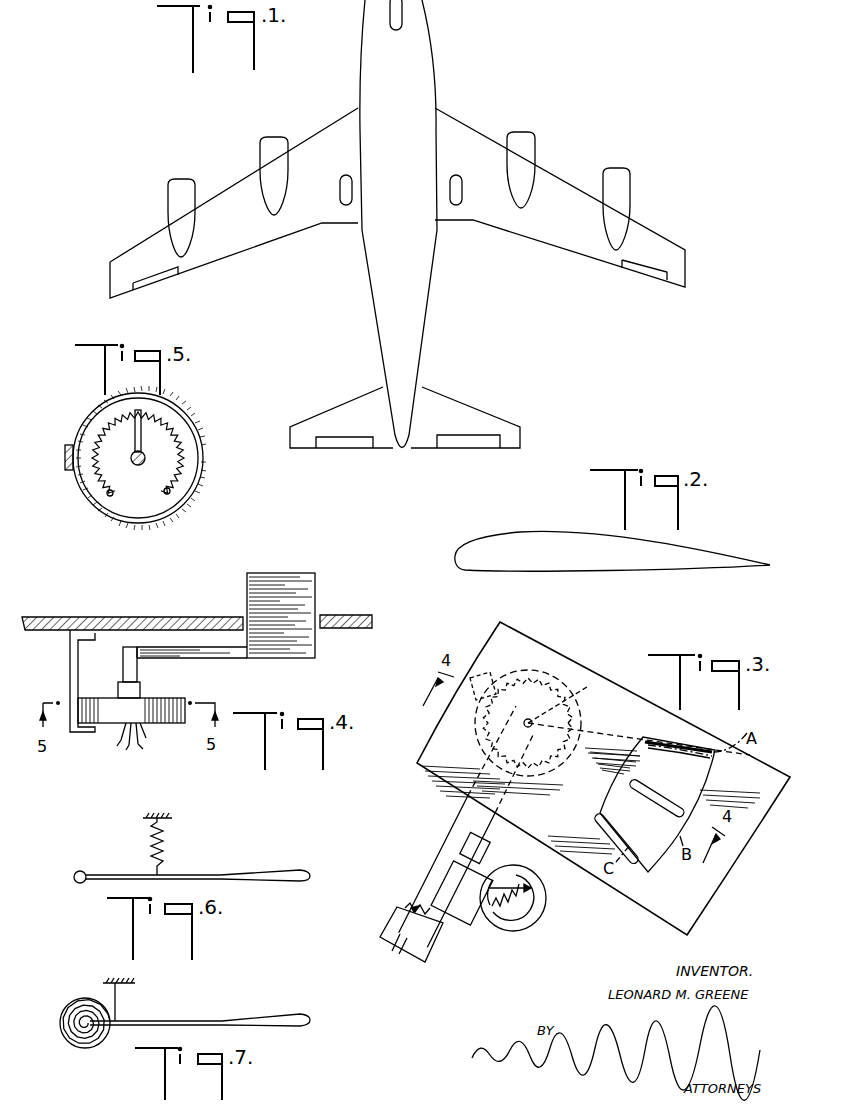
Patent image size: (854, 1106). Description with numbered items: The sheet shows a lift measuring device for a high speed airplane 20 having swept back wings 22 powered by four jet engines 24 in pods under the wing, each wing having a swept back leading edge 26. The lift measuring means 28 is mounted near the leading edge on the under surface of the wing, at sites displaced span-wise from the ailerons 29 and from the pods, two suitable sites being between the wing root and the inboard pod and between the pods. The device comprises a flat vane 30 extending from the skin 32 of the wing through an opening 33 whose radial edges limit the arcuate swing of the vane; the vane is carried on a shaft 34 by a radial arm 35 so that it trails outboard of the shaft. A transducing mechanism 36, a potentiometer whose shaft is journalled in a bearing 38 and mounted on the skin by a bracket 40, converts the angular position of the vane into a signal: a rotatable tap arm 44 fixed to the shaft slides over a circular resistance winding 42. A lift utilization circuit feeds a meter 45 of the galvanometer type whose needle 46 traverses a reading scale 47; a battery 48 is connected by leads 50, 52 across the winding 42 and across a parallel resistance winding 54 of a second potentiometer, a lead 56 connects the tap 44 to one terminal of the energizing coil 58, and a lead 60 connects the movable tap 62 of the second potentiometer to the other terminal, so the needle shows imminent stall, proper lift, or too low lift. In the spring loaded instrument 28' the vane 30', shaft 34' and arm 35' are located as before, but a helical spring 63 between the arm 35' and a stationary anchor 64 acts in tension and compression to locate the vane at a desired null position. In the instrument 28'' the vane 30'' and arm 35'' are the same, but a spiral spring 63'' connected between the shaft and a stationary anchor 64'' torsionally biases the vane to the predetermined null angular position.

In FIG. 1, the airplane 20 is at (368, 348).
In FIG. 1, the swept back wings 22 is at (262, 237).
In FIG. 2, the swept back wings 22 is at (541, 573).
In FIG. 1, the jet engines 24 is at (622, 194).
In FIG. 1, the swept back leading edge 26 is at (548, 171).
In FIG. 2, the swept back leading edge 26 is at (466, 546).
In FIG. 1, the lift measuring means 28 is at (529, 147).
In FIG. 2, the lift measuring means 28 is at (442, 581).
In FIG. 3, the lift measuring means 28 is at (713, 722).
In FIG. 1, the ailerons 29 is at (650, 278).
In FIG. 3, the vane 30 is at (654, 804).
In FIG. 4, the vane 30 is at (259, 611).
In FIG. 4, the skin 32 is at (115, 617).
In FIG. 3, the opening 33 is at (716, 787).
In FIG. 4, the opening 33 is at (318, 628).
In FIG. 3, the shaft 34 is at (516, 711).
In FIG. 4, the shaft 34 is at (112, 664).
In FIG. 5, the shaft 34 is at (137, 472).
In FIG. 4, the arm 35 is at (192, 625).
In FIG. 4, the transducing mechanism 36 is at (109, 736).
In FIG. 4, the bearing 38 is at (140, 691).
In FIG. 4, the bracket 40 is at (70, 668).
In FIG. 5, the bracket 40 is at (67, 469).
In FIG. 3, the circular resistance winding 42 is at (575, 726).
In FIG. 5, the circular resistance winding 42 is at (180, 438).
In FIG. 3, the rotatable tap arm 44 is at (565, 696).
In FIG. 5, the rotatable tap arm 44 is at (141, 439).
In FIG. 3, the meter 45 is at (516, 931).
In FIG. 3, the needle 46 is at (533, 879).
In FIG. 3, the reading scale 47 is at (548, 911).
In FIG. 3, the battery 48 is at (393, 955).
In FIG. 3, the lead 50 is at (403, 904).
In FIG. 3, the lead 52 is at (438, 940).
In FIG. 3, the resistance winding 54 is at (397, 920).
In FIG. 3, the lead 56 is at (466, 832).
In FIG. 3, the energizing coil 58 is at (513, 879).
In FIG. 3, the lead 60 is at (480, 885).
In FIG. 3, the movable tap 62 is at (442, 922).
In FIG. 6, the helical spring 63 is at (183, 846).
In FIG. 6, the stationary anchor 64 is at (179, 801).
In FIG. 6, the instrument 28' is at (70, 900).
In FIG. 6, the vane 30' is at (265, 855).
In FIG. 6, the shaft 34' is at (62, 863).
In FIG. 6, the arm 35' is at (153, 858).
In FIG. 7, the instrument 28'' is at (58, 1071).
In FIG. 7, the vane 30'' is at (266, 1001).
In FIG. 7, the arm 35'' is at (156, 1003).
In FIG. 7, the spiral spring 63'' is at (78, 1010).
In FIG. 7, the stationary anchor 64'' is at (145, 987).